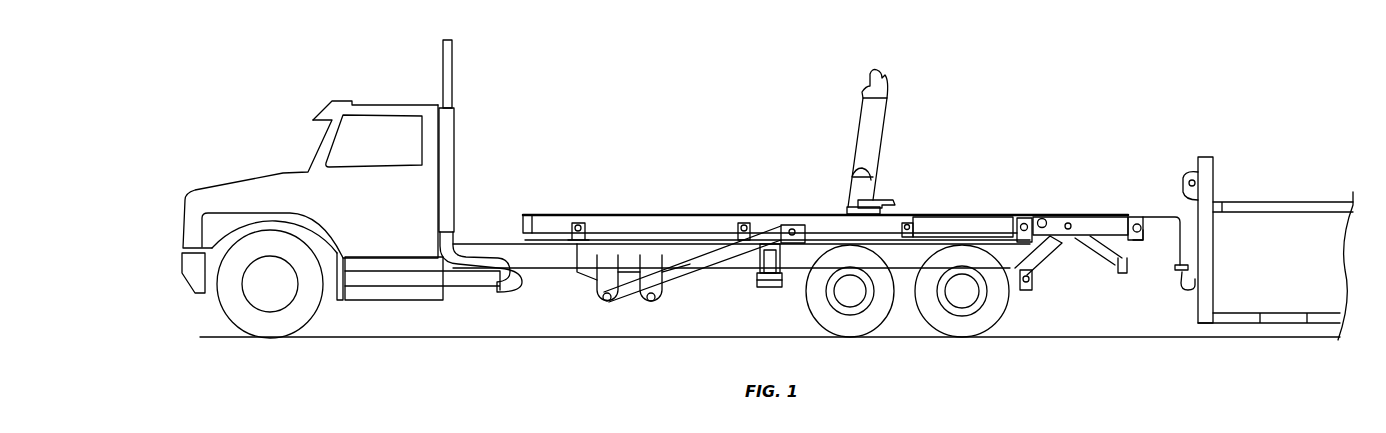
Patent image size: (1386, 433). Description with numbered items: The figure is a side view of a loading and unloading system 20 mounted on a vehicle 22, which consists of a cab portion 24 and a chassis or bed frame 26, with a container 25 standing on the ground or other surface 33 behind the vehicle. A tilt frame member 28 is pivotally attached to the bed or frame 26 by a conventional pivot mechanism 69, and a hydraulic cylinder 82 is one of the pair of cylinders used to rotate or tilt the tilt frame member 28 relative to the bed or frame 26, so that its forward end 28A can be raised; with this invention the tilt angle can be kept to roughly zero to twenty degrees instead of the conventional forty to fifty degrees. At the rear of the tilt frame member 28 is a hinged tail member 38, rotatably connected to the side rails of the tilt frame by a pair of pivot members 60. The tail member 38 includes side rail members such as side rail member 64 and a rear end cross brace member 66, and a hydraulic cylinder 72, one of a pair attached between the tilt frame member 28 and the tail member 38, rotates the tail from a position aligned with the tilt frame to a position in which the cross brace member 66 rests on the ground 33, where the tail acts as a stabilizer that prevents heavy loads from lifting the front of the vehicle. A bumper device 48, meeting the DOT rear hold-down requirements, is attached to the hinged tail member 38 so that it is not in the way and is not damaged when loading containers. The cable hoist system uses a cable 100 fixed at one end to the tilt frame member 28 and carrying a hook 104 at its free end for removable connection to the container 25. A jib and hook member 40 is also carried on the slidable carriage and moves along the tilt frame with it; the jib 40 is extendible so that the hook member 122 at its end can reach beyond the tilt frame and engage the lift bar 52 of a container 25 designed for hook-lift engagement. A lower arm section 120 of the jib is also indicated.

The loading and unloading system 20 is at (1033, 101).
The vehicle 22 is at (237, 122).
The cab portion 24 is at (390, 243).
The container 25 is at (1333, 267).
The chassis or bed frame 26 is at (748, 267).
The tilt frame member 28 is at (668, 214).
The forward end of the tilt frame member 28A is at (524, 214).
The ground or other surface 33 is at (558, 340).
The hinged tail member 38 is at (1083, 236).
The jib and hook member 40 is at (868, 142).
The bumper device 48 is at (1123, 275).
The lift bar 52 is at (1207, 187).
The pivot member 60 is at (1043, 219).
The side rail member 64 is at (1108, 222).
The rear end cross brace member 66 is at (1165, 237).
The pivot mechanism 69 is at (1013, 223).
The hydraulic cylinder 72 is at (1045, 253).
The hydraulic cylinder 82 is at (690, 273).
The cable 100 is at (1183, 243).
The hook 104 is at (1193, 277).
The lower hook arm section 120 is at (875, 162).
The hook member 122 is at (887, 67).